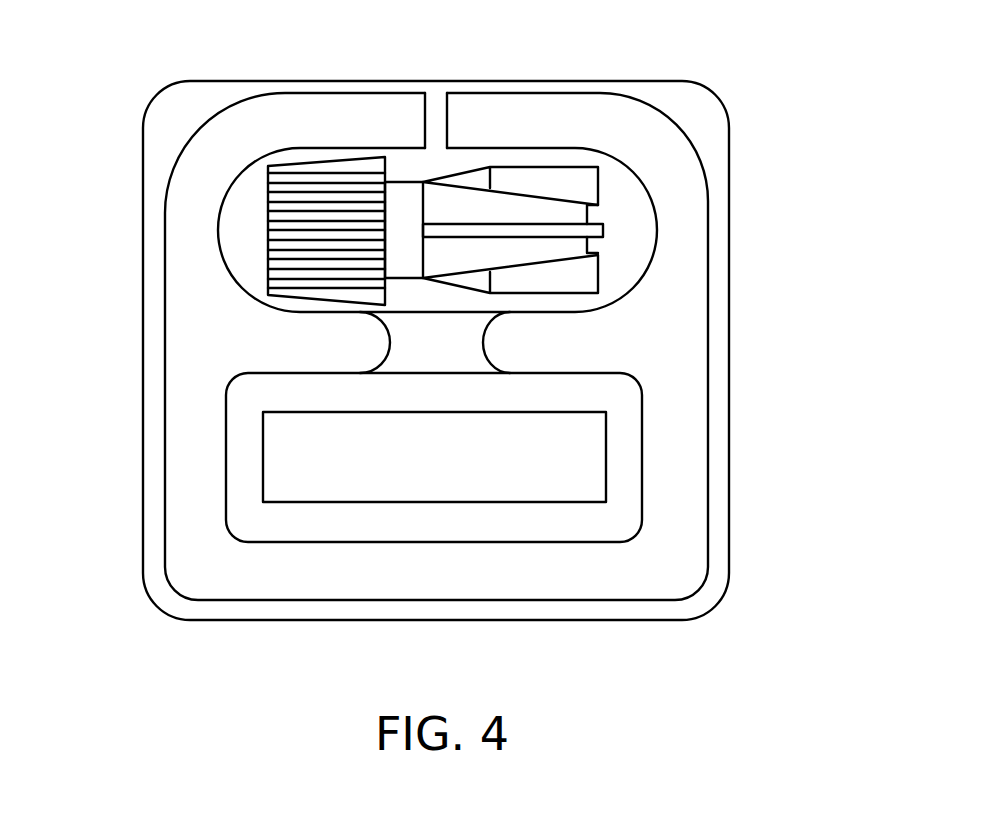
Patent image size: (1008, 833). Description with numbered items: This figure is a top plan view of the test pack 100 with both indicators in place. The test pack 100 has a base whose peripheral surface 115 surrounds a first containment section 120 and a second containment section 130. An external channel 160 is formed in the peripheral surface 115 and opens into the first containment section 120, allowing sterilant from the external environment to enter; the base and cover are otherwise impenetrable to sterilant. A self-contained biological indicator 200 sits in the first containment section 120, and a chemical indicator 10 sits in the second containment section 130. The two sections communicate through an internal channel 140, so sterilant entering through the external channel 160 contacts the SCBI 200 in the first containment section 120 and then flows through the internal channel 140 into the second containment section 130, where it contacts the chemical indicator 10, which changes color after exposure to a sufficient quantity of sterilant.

The test pack 100 is at (792, 264).
The peripheral surface 115 is at (187, 210).
The external channel 160 is at (438, 108).
The self-contained biological indicator 200 is at (553, 187).
The first containment section 120 is at (633, 232).
The internal channel 140 is at (452, 343).
The second containment section 130 is at (625, 508).
The chemical indicator 10 is at (433, 502).